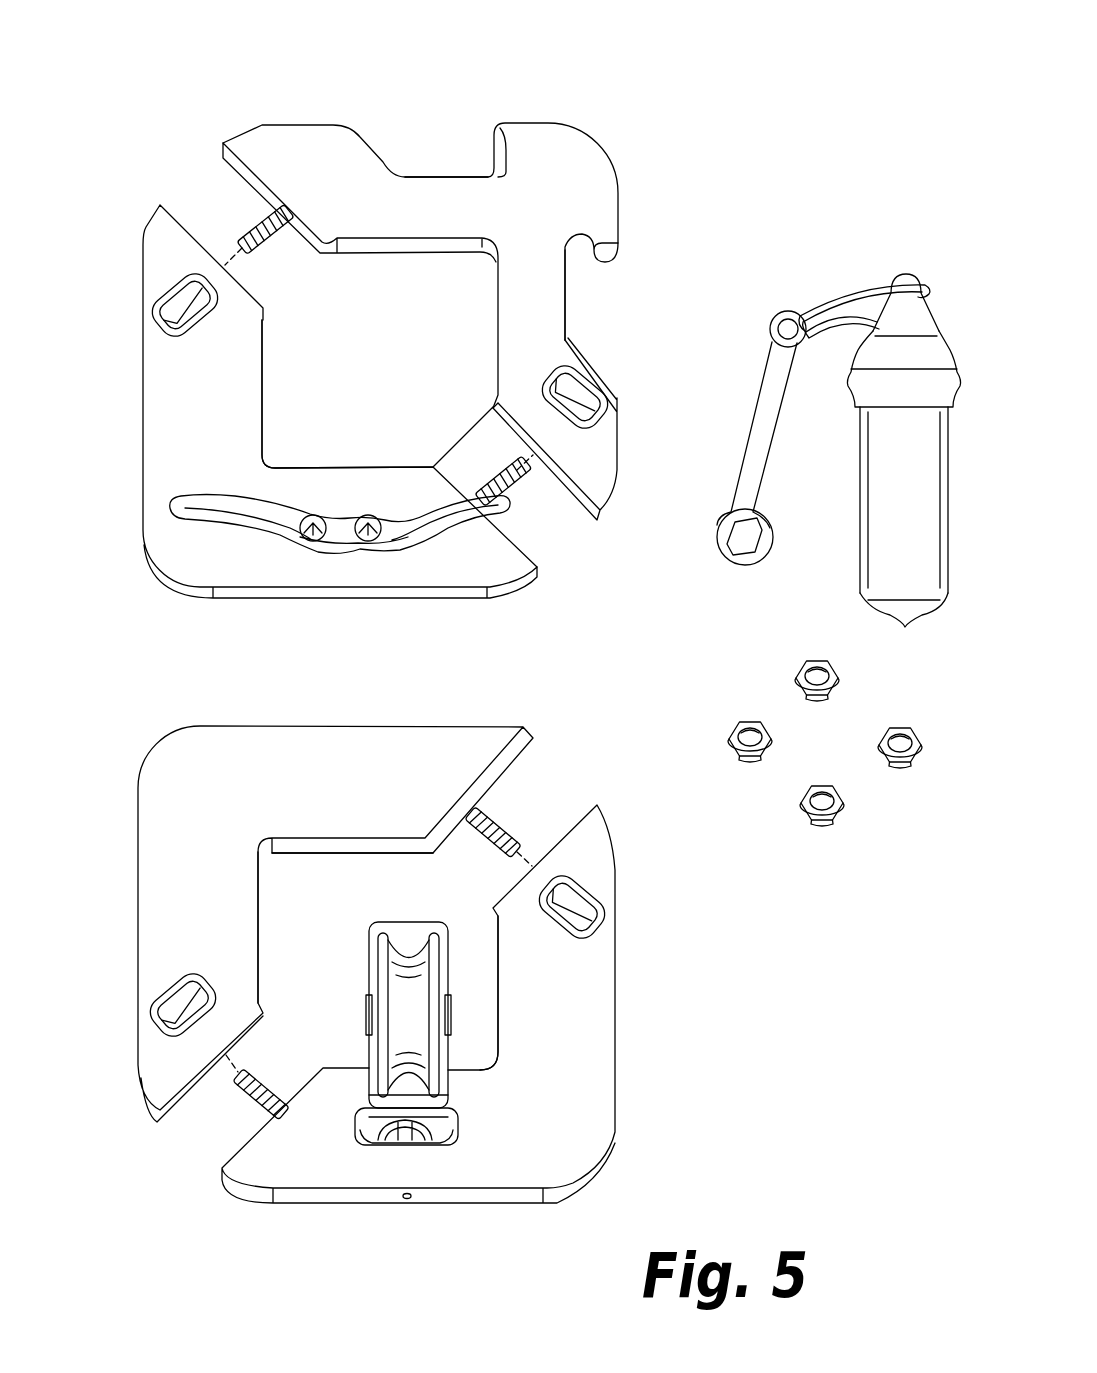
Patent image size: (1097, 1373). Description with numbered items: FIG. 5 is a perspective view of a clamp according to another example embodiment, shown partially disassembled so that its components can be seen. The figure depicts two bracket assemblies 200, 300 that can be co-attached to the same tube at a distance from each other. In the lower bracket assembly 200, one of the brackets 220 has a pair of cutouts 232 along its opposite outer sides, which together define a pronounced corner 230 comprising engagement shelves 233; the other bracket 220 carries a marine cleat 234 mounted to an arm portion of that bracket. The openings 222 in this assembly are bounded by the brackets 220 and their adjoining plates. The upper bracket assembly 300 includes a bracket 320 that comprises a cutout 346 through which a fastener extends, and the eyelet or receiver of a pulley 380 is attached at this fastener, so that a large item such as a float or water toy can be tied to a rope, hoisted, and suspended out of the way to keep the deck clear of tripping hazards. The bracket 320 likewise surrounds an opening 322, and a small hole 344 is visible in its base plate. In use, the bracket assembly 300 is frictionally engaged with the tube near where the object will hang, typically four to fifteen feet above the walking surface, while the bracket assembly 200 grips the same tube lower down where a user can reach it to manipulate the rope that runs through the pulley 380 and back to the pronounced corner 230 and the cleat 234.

The bracket assembly 200 is at (148, 132).
The bracket 220 is at (478, 92).
The opening 222 is at (316, 450).
The pronounced corner 230 is at (616, 130).
The cutout 232 is at (430, 157).
The engagement shelf 233 is at (628, 246).
The cleat 234 is at (336, 560).
The bracket assembly 300 is at (604, 735).
The bracket 320 is at (410, 703).
The opening 322 is at (295, 875).
The hole 344 is at (406, 1205).
The cutout 346 is at (458, 1108).
The pulley 380 is at (456, 1015).